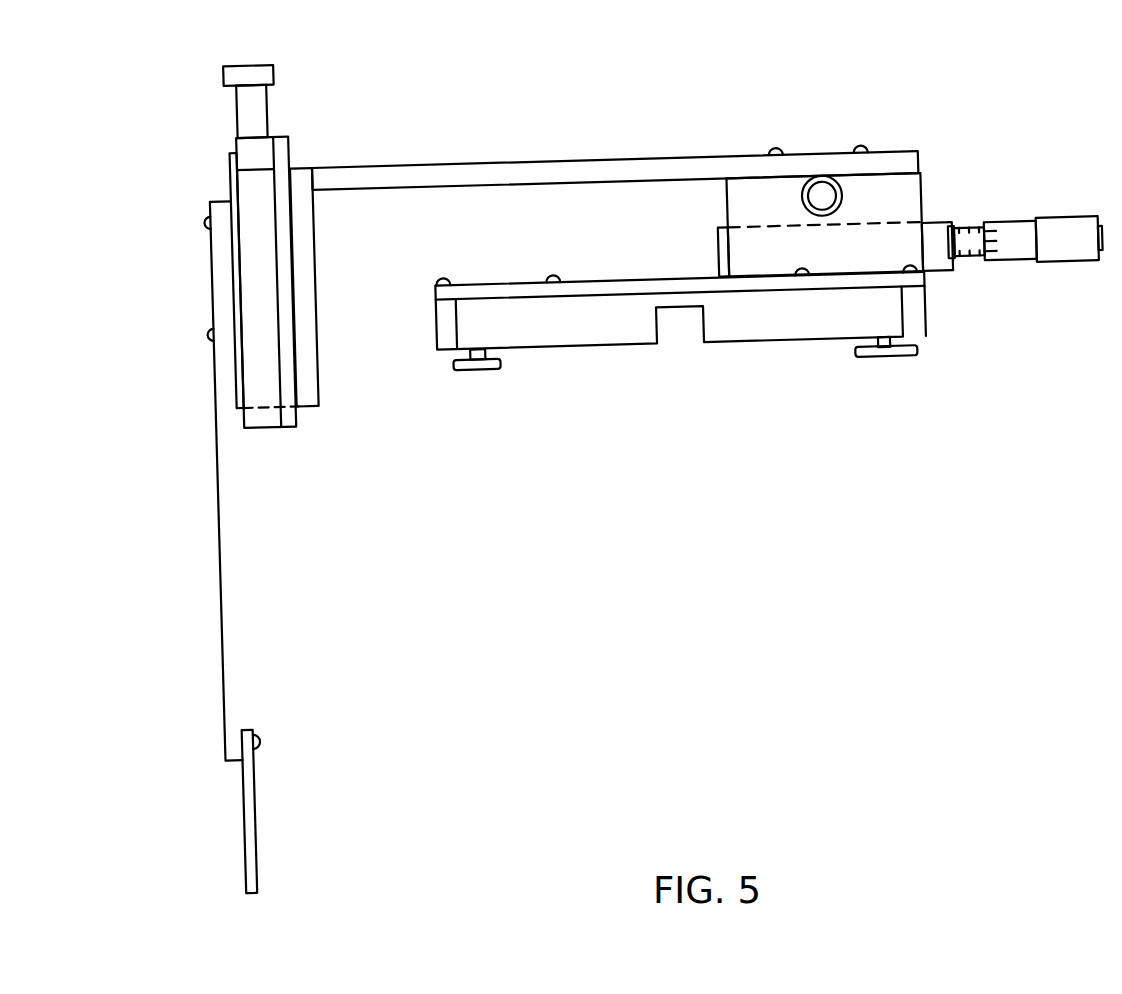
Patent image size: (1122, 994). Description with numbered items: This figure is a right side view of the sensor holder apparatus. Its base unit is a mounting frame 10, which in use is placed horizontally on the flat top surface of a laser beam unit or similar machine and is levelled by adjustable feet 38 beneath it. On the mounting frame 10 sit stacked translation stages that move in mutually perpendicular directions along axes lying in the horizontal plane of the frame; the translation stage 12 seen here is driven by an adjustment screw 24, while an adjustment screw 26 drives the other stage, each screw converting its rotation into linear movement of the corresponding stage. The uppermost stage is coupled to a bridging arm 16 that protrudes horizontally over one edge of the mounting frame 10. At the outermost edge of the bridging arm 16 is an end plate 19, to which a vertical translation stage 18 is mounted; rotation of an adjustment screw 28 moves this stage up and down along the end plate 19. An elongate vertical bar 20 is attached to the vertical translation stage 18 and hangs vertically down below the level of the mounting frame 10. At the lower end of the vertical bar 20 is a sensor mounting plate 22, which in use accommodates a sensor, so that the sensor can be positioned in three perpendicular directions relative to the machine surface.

The mounting frame 10 is at (765, 327).
The translation stage 12 is at (928, 232).
The bridging arm 16 is at (597, 170).
The vertical translation stage 18 is at (253, 168).
The end plate 19 is at (308, 388).
The elongate vertical bar 20 is at (229, 521).
The sensor mounting plate 22 is at (240, 808).
The adjustment screw 24 is at (1055, 227).
The adjustment screw 26 is at (820, 177).
The adjustment screw 28 is at (247, 108).
The adjustable feet 38 is at (475, 370).